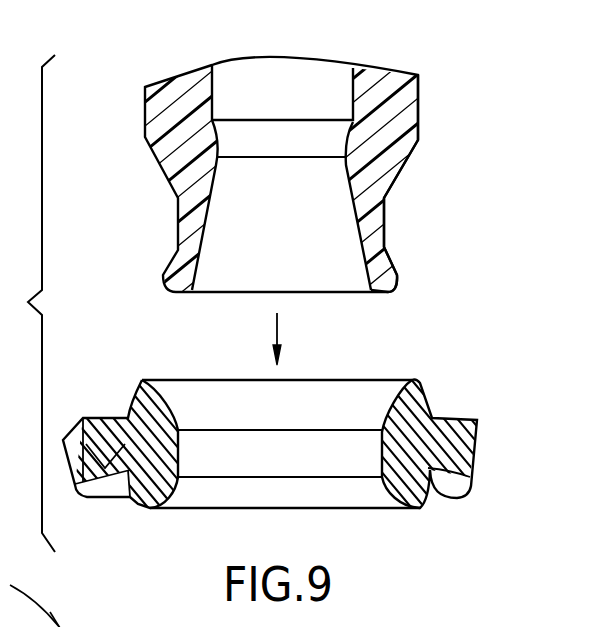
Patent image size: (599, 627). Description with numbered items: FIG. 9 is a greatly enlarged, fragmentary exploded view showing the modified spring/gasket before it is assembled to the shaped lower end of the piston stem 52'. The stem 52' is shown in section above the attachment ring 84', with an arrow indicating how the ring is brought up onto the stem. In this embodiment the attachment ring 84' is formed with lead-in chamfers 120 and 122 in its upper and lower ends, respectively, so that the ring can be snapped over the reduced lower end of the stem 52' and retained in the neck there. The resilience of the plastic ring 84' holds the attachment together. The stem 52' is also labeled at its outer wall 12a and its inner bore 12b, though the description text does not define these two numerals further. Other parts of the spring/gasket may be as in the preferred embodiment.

The piston stem 52' is at (316, 165).
The outer wall of collar 12a is at (384, 212).
The bore of collar 12b is at (347, 151).
The lead-in chamfer 120 is at (385, 392).
The attachment ring 84' is at (430, 428).
The lead-in chamfer 122 is at (382, 498).